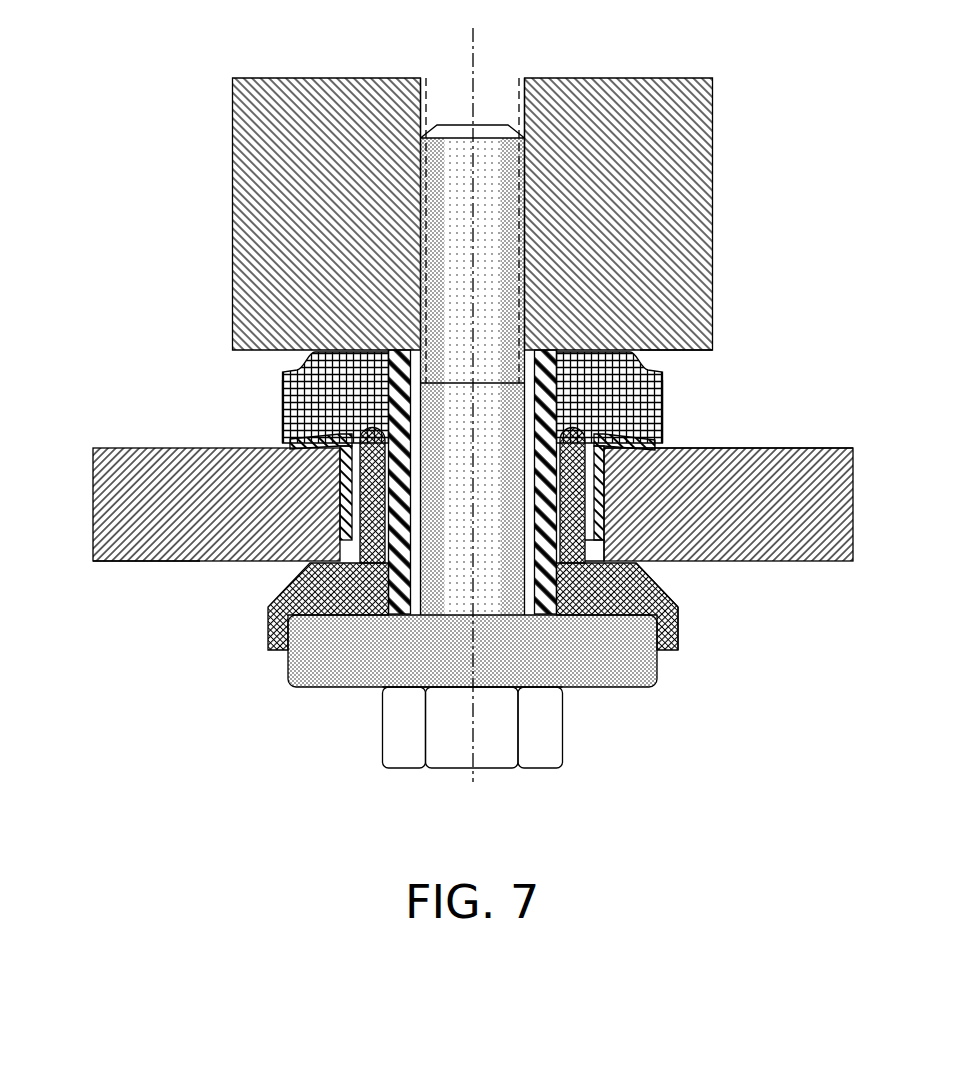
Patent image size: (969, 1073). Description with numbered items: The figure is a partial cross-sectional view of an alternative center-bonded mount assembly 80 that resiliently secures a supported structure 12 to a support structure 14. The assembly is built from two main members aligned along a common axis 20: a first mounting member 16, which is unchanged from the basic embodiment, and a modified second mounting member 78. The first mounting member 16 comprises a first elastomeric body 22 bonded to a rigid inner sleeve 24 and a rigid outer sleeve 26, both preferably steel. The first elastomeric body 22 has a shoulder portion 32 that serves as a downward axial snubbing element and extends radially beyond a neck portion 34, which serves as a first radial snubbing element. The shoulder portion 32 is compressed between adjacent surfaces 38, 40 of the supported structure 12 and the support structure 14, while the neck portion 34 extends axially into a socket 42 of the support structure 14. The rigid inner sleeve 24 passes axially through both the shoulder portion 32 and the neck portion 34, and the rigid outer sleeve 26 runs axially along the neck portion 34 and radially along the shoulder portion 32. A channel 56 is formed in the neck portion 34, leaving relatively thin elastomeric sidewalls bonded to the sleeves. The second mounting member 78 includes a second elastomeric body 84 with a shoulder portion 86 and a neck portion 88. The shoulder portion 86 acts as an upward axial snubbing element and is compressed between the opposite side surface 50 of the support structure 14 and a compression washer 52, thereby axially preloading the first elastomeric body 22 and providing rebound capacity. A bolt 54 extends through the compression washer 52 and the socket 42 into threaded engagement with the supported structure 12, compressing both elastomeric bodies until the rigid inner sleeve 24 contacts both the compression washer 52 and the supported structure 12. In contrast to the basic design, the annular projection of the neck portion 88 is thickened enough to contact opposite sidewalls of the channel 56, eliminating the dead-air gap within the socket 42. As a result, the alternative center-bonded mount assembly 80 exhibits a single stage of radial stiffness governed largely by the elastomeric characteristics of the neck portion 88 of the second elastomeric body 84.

The supported structure 12 is at (272, 182).
The support structure 14 is at (135, 506).
The first mounting member 16 is at (283, 378).
The common axis 20 is at (472, 42).
The first elastomeric body 22 is at (663, 395).
The rigid inner sleeve 24 is at (545, 616).
The rigid outer sleeve 26 is at (660, 441).
The shoulder portion 32 is at (282, 409).
The neck portion 34 is at (338, 480).
The adjacent surface of supported structure 38 is at (682, 352).
The adjacent surface of support structure 40 is at (807, 447).
The socket 42 is at (640, 565).
The opposite side surface 50 is at (127, 562).
The compression washer 52 is at (355, 653).
The bolt 54 is at (497, 212).
The channel 56 is at (369, 428).
The second mounting member 78 is at (270, 617).
The alternative center-bonded mount assembly 80 is at (742, 362).
The second elastomeric body 84 is at (657, 587).
The shoulder portion 86 is at (678, 597).
The neck portion 88 is at (604, 485).